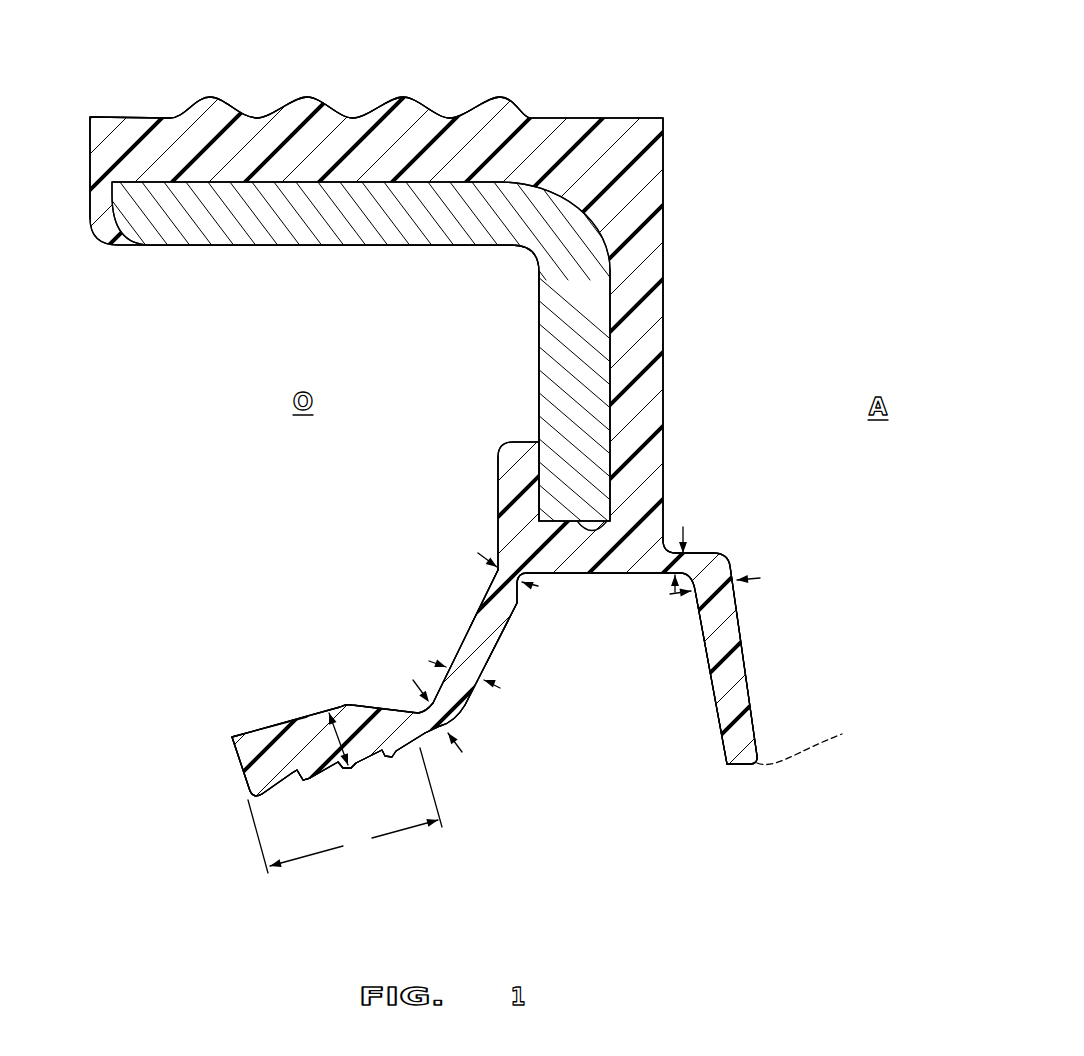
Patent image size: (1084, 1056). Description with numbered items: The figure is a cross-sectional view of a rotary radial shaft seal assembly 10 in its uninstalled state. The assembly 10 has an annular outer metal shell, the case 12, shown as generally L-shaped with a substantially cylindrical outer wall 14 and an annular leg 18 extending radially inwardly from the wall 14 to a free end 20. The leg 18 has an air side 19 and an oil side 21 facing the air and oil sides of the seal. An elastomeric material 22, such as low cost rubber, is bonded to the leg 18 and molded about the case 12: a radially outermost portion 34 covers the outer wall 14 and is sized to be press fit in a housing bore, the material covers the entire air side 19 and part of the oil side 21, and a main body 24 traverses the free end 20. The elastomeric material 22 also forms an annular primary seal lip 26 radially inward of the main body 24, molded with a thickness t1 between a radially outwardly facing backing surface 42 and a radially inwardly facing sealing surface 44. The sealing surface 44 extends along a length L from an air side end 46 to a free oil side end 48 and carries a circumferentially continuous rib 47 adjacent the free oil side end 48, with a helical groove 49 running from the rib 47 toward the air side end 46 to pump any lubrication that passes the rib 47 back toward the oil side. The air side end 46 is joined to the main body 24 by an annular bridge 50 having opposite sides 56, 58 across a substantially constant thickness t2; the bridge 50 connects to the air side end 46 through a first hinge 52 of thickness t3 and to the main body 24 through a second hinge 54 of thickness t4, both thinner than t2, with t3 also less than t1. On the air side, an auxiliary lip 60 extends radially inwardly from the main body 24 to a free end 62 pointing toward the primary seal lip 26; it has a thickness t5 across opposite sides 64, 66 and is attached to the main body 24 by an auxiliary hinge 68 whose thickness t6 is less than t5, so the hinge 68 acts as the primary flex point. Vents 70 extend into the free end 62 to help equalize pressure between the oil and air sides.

The assembly 10 is at (800, 181).
The case 12 is at (211, 280).
The outer wall 14 is at (275, 229).
The leg 18 is at (566, 345).
The air side 19 is at (615, 379).
The free end 20 is at (665, 540).
The oil side 21 is at (540, 375).
The elastomeric material 22 is at (670, 297).
The main body 24 is at (571, 557).
The primary seal lip 26 is at (280, 696).
The radially outermost portion 34 is at (533, 101).
The backing surface 42 is at (256, 728).
The sealing surface 44 is at (302, 778).
The air side end 46 is at (420, 709).
The rib 47 is at (250, 808).
The free oil side end 48 is at (238, 768).
The helical groove 49 is at (334, 761).
The bridge 50 is at (482, 653).
The first hinge 52 is at (459, 724).
The second hinge 54 is at (519, 600).
The side 56 is at (503, 633).
The side 58 is at (461, 628).
The auxiliary lip 60 is at (772, 624).
The free end 62 is at (740, 765).
The side 64 is at (744, 659).
The side 66 is at (707, 656).
The auxiliary hinge 68 is at (670, 552).
The vents 70 is at (815, 742).
The thickness t1 is at (341, 728).
The thickness t2 is at (500, 688).
The thickness t3 is at (462, 752).
The thickness t4 is at (538, 586).
The thickness t5 is at (741, 576).
The thickness t6 is at (683, 528).
The length L is at (345, 810).